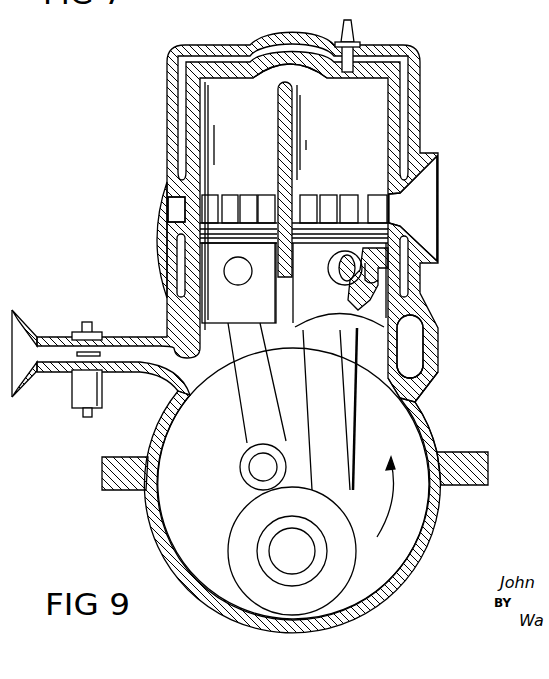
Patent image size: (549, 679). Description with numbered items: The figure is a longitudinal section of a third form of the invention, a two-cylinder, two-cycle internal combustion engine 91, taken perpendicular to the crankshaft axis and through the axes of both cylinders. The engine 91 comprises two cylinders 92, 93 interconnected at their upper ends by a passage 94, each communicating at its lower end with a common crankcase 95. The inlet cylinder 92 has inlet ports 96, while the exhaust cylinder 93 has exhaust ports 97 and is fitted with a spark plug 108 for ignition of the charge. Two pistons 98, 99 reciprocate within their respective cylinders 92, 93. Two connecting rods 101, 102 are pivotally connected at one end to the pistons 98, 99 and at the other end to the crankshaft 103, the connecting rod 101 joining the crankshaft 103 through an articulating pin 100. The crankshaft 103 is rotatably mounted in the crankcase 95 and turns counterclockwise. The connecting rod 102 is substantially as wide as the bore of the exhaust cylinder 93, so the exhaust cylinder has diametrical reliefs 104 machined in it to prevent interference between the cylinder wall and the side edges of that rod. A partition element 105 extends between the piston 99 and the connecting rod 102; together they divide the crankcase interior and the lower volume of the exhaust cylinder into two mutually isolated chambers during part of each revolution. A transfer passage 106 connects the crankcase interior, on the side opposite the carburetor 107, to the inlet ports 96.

The internal combustion engine 91 is at (443, 137).
The inlet cylinder 92 is at (237, 103).
The exhaust cylinder 93 is at (370, 95).
The passage 94 is at (287, 68).
The crankcase 95 is at (150, 522).
The inlet ports 96 is at (227, 207).
The exhaust ports 97 is at (440, 188).
The piston 98 is at (212, 271).
The piston 99 is at (387, 231).
The articulating pin 100 is at (262, 467).
The connecting rod 101 is at (173, 338).
The connecting rod 102 is at (343, 402).
The crankshaft 103 is at (403, 430).
The diametrical reliefs 104 is at (382, 368).
The partition element 105 is at (380, 271).
The transfer passage 106 is at (175, 207).
The carburetor 107 is at (82, 400).
The spark plug fitting 108 is at (354, 30).